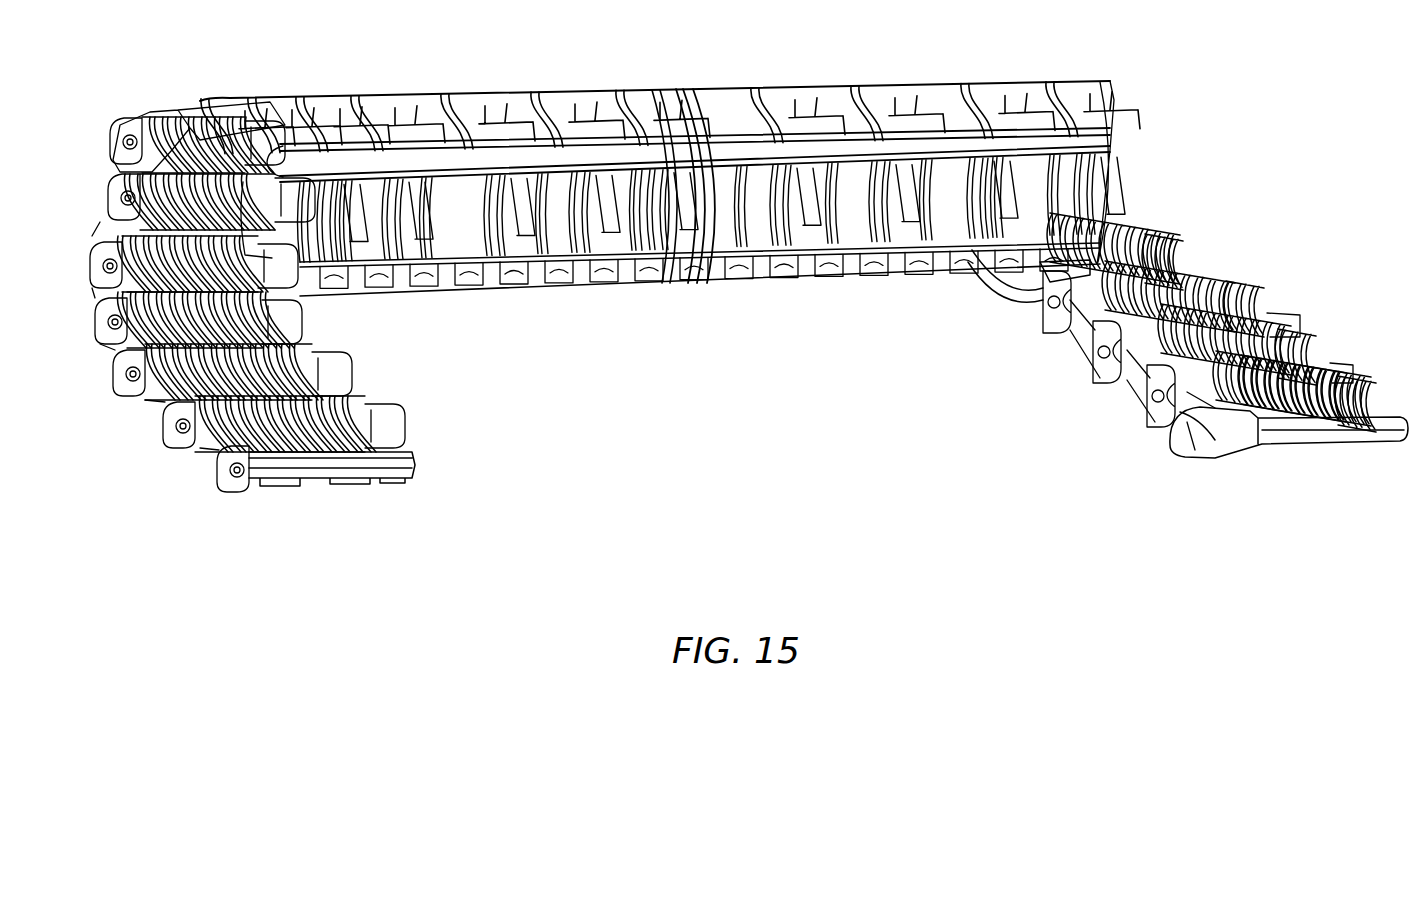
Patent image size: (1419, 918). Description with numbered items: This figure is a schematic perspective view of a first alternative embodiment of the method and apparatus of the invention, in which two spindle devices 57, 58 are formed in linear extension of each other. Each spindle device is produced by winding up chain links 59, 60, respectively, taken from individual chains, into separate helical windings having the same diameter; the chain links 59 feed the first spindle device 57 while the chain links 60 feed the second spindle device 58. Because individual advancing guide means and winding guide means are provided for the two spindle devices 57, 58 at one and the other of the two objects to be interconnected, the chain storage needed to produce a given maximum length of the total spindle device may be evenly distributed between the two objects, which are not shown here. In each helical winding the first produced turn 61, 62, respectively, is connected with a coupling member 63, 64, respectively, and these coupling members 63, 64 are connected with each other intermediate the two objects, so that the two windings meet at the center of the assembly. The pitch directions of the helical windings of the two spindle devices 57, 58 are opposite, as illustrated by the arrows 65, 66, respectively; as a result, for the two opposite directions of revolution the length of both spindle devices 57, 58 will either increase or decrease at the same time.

The spindle device 57 is at (670, 191).
The spindle device 58 is at (889, 75).
The chain links 59 is at (227, 458).
The chain links 60 is at (1182, 437).
The first produced turn 61 is at (632, 92).
The first produced turn 62 is at (720, 243).
The coupling member 63 is at (653, 90).
The coupling member 64 is at (693, 88).
The arrow 65 is at (418, 86).
The arrow 66 is at (893, 289).